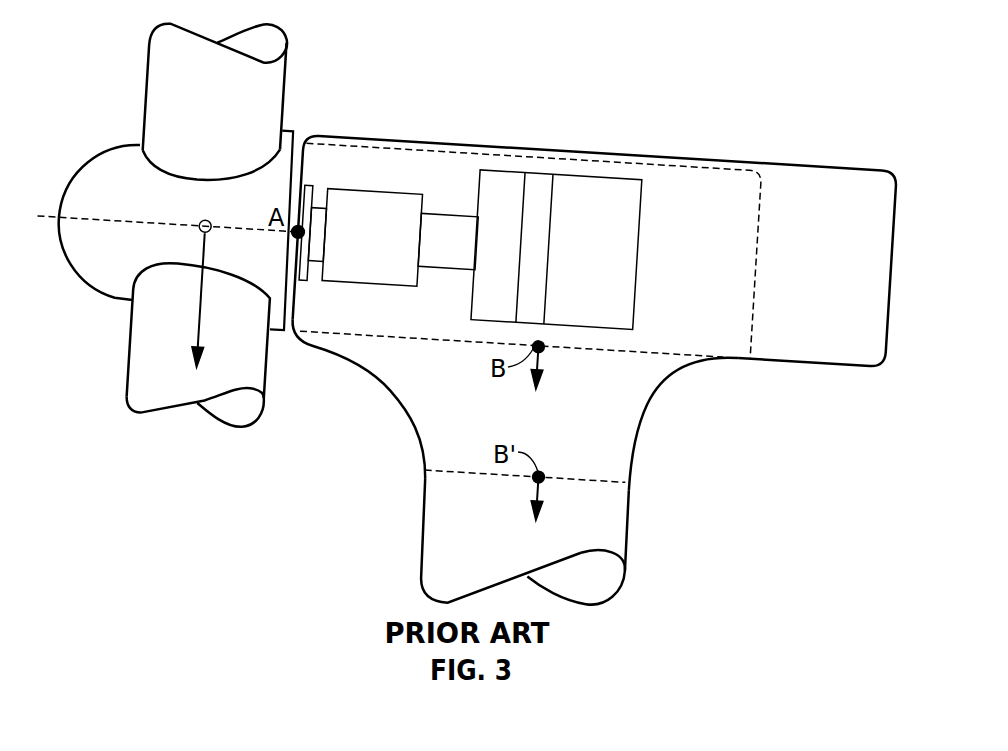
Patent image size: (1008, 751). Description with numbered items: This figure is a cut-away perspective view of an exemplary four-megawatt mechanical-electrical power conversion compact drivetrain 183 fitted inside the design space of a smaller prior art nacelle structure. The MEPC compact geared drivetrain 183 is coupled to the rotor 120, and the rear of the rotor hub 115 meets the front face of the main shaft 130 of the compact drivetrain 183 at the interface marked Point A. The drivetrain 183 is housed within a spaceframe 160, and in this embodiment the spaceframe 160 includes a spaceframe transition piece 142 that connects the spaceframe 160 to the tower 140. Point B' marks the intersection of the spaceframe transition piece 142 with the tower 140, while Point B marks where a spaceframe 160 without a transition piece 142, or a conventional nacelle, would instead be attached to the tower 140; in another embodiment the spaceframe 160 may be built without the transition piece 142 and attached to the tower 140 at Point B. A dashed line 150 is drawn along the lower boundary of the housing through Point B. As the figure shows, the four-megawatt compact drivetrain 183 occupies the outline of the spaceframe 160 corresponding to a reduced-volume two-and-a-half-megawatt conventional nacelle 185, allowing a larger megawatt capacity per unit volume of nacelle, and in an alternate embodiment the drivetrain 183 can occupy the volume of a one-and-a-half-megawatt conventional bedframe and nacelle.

The rotor hub 115 is at (121, 163).
The rotor 120 is at (115, 301).
The main shaft 130 is at (317, 206).
The MEPC compact drivetrain 183 is at (598, 170).
The conventional nacelle 185 is at (680, 157).
The spaceframe 160 is at (765, 198).
The parting line 150 is at (625, 352).
The spaceframe transition piece 142 is at (638, 430).
The tower 140 is at (628, 522).